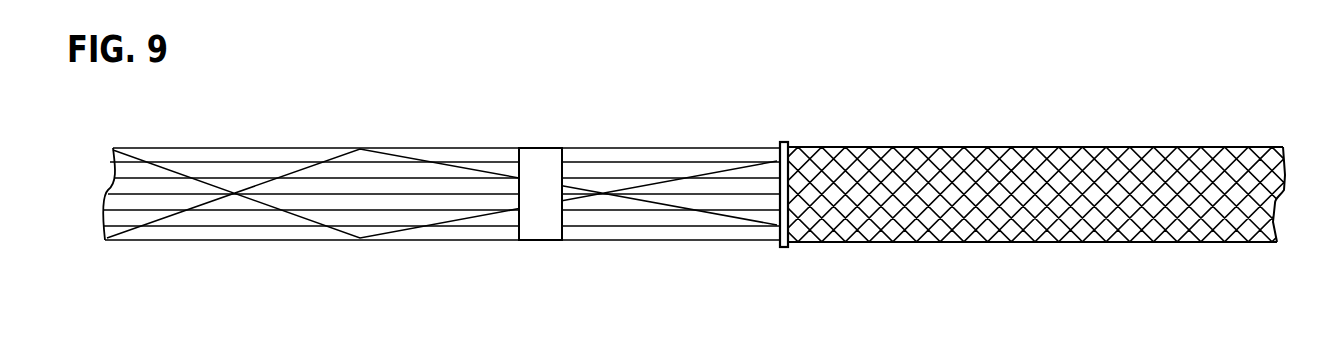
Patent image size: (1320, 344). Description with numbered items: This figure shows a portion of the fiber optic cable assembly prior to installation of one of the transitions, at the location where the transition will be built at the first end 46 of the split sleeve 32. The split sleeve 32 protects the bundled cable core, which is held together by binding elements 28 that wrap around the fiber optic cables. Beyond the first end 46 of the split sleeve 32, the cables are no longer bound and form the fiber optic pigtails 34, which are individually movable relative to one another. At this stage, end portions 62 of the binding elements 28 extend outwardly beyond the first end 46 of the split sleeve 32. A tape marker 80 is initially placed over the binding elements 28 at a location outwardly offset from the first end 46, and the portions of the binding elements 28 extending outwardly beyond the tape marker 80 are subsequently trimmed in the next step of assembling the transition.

The binding elements 28 is at (399, 156).
The split sleeve 32 is at (1097, 146).
The fiber optic pigtails 34 is at (225, 240).
The first end 46 is at (780, 143).
The end portions 62 is at (673, 178).
The tape marker 80 is at (541, 233).